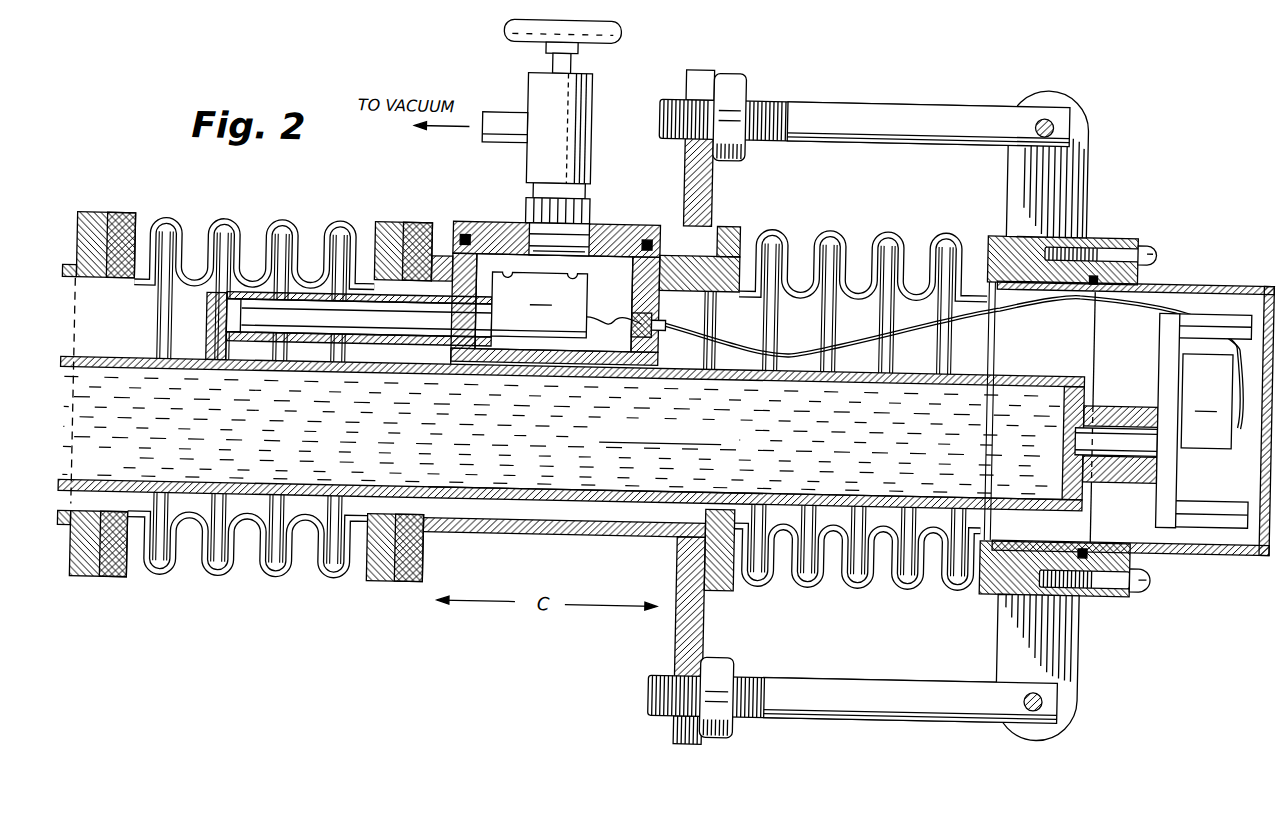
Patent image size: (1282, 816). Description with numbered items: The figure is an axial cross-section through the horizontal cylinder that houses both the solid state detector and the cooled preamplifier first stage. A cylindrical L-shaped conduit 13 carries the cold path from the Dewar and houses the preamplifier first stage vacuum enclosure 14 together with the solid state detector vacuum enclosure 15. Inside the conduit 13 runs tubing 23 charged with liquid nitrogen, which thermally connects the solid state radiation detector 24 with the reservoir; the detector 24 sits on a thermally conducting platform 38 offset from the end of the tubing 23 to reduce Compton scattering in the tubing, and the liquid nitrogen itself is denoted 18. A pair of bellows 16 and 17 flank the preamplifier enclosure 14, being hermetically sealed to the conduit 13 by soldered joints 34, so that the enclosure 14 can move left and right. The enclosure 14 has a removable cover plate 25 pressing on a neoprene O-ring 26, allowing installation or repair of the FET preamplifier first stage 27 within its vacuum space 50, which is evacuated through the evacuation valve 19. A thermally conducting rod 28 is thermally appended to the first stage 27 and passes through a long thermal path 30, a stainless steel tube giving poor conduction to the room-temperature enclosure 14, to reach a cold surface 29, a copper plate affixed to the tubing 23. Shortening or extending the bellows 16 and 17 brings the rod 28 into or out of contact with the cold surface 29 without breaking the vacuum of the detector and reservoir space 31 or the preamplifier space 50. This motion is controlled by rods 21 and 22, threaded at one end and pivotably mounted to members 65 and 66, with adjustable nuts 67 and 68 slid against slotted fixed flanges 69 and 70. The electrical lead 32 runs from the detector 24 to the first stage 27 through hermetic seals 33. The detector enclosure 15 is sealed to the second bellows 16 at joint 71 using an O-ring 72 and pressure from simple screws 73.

The cylindrical L-shaped conduit 13 is at (78, 224).
The preamplifier first stage vacuum enclosure 14 is at (540, 357).
The solid state detector vacuum enclosure 15 is at (1220, 293).
The bellows 16 is at (890, 243).
The bellows 17 is at (279, 229).
The fixed rods 18 is at (108, 481).
The evacuation valve 19 is at (534, 88).
The rod 21 is at (868, 684).
The rod 22 is at (892, 122).
The tubing charged with liquid nitrogen 23 is at (578, 504).
The solid state radiation detector 24 is at (1207, 421).
The cover plate 25 is at (507, 236).
The neoprene O-ring 26 is at (643, 247).
The FET preamplifier first stage 27 is at (539, 305).
The thermally conducting rod 28 is at (237, 303).
The cold surface 29 is at (210, 301).
The long thermal path 30 is at (430, 348).
The vacuum space 31 is at (836, 262).
The electrical lead 32 is at (1029, 296).
The hermetic seal 33 is at (661, 334).
The soldered joints 34 is at (110, 226).
The thermally conducting platform 38 is at (1168, 479).
The vacuum space of the preamplifier first stage 50 is at (601, 278).
The member 65 is at (1066, 623).
The member 66 is at (1065, 181).
The adjustable nut 67 is at (723, 669).
The adjustable nut 68 is at (728, 104).
The fixed flange 69 is at (690, 635).
The fixed flange 70 is at (695, 172).
The joint 71 is at (1093, 255).
The O-ring 72 is at (1086, 540).
The screws 73 is at (1145, 262).